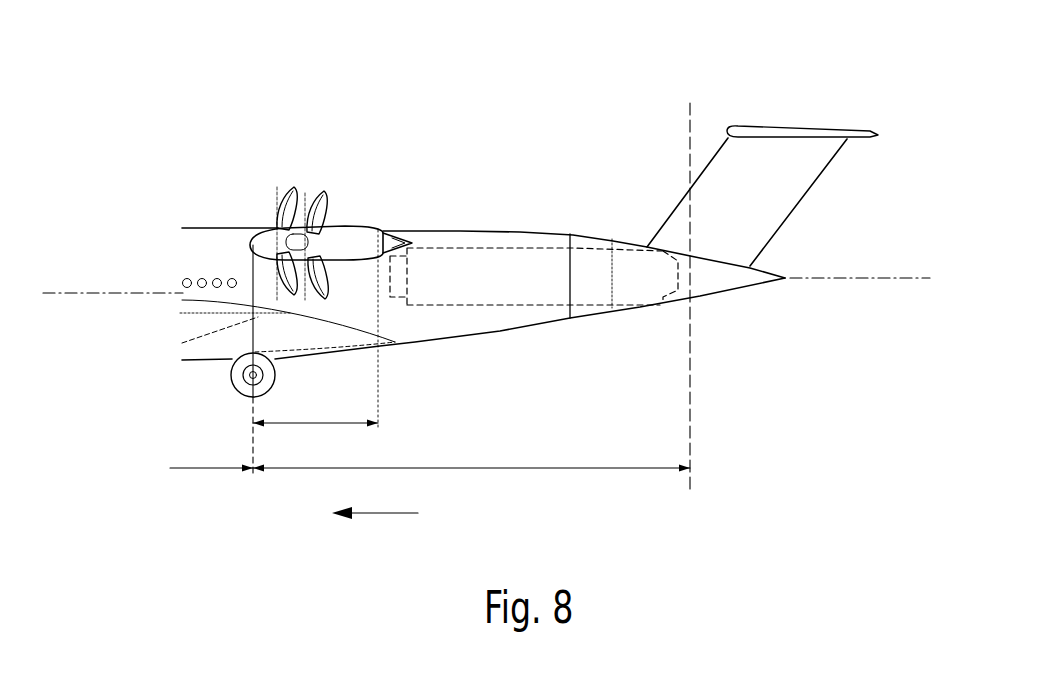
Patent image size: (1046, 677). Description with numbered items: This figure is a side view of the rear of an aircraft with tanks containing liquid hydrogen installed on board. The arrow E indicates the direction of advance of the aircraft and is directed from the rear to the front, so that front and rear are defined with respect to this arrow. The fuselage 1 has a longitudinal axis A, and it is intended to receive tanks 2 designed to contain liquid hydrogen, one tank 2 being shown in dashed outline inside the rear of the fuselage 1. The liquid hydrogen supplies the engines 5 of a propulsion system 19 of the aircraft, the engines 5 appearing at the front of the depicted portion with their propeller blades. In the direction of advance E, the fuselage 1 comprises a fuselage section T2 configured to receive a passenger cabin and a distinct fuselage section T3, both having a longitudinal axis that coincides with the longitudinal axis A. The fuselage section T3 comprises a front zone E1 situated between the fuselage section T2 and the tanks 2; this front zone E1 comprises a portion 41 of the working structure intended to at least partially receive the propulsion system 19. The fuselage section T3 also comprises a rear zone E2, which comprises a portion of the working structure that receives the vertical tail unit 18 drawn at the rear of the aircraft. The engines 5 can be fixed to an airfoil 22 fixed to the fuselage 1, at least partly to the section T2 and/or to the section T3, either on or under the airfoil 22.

The fuselage 1 is at (399, 145).
The tank 2 is at (618, 272).
The engine 5 is at (278, 207).
The vertical tail unit 18 is at (773, 192).
The propulsion system 19 is at (344, 193).
The airfoil 22 is at (190, 322).
The portion of the working structure 41 is at (315, 330).
The longitudinal axis A is at (885, 280).
The direction of advance E is at (375, 496).
The front zone E1 is at (316, 447).
The rear zone E2 is at (739, 326).
The fuselage section T2 is at (211, 452).
The fuselage section T3 is at (471, 452).